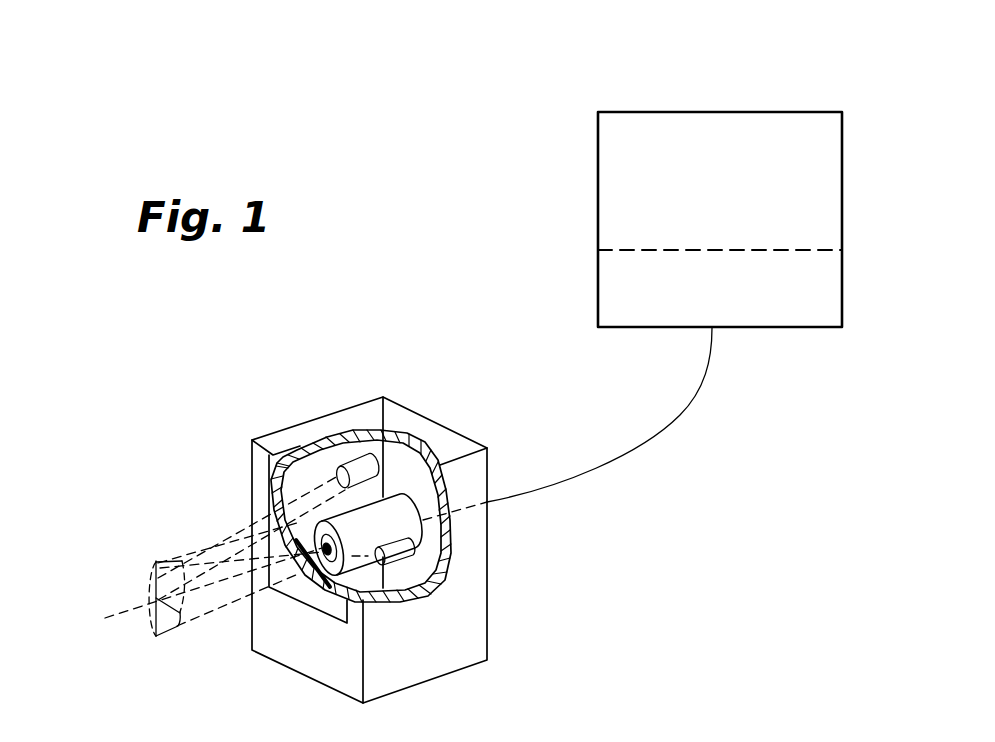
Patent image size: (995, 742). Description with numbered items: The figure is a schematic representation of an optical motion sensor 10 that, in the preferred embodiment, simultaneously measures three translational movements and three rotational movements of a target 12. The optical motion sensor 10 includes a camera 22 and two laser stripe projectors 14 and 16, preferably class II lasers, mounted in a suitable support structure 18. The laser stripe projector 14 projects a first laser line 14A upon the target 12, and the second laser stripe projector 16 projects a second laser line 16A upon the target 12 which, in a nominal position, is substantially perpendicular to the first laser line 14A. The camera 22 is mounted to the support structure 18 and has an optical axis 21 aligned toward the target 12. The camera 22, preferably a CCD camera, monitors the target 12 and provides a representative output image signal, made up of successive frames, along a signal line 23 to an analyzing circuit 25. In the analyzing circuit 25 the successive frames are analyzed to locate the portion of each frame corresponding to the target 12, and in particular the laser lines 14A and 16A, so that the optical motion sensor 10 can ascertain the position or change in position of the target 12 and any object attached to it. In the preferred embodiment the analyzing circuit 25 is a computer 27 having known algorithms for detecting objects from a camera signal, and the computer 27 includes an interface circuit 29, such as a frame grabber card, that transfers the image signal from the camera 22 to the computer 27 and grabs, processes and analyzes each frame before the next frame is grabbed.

The optical motion sensor 10 is at (447, 356).
The target 12 is at (143, 625).
The laser stripe projector 14 is at (357, 455).
The first laser line 14A is at (156, 598).
The second laser stripe projector 16 is at (415, 556).
The second laser line 16A is at (150, 563).
The support structure 18 is at (450, 430).
The optical axis 21 is at (233, 580).
The camera 22 is at (418, 515).
The signal line 23 is at (668, 428).
The analyzing circuit 25 is at (572, 134).
The computer 27 is at (778, 112).
The interface circuit 29 is at (805, 328).